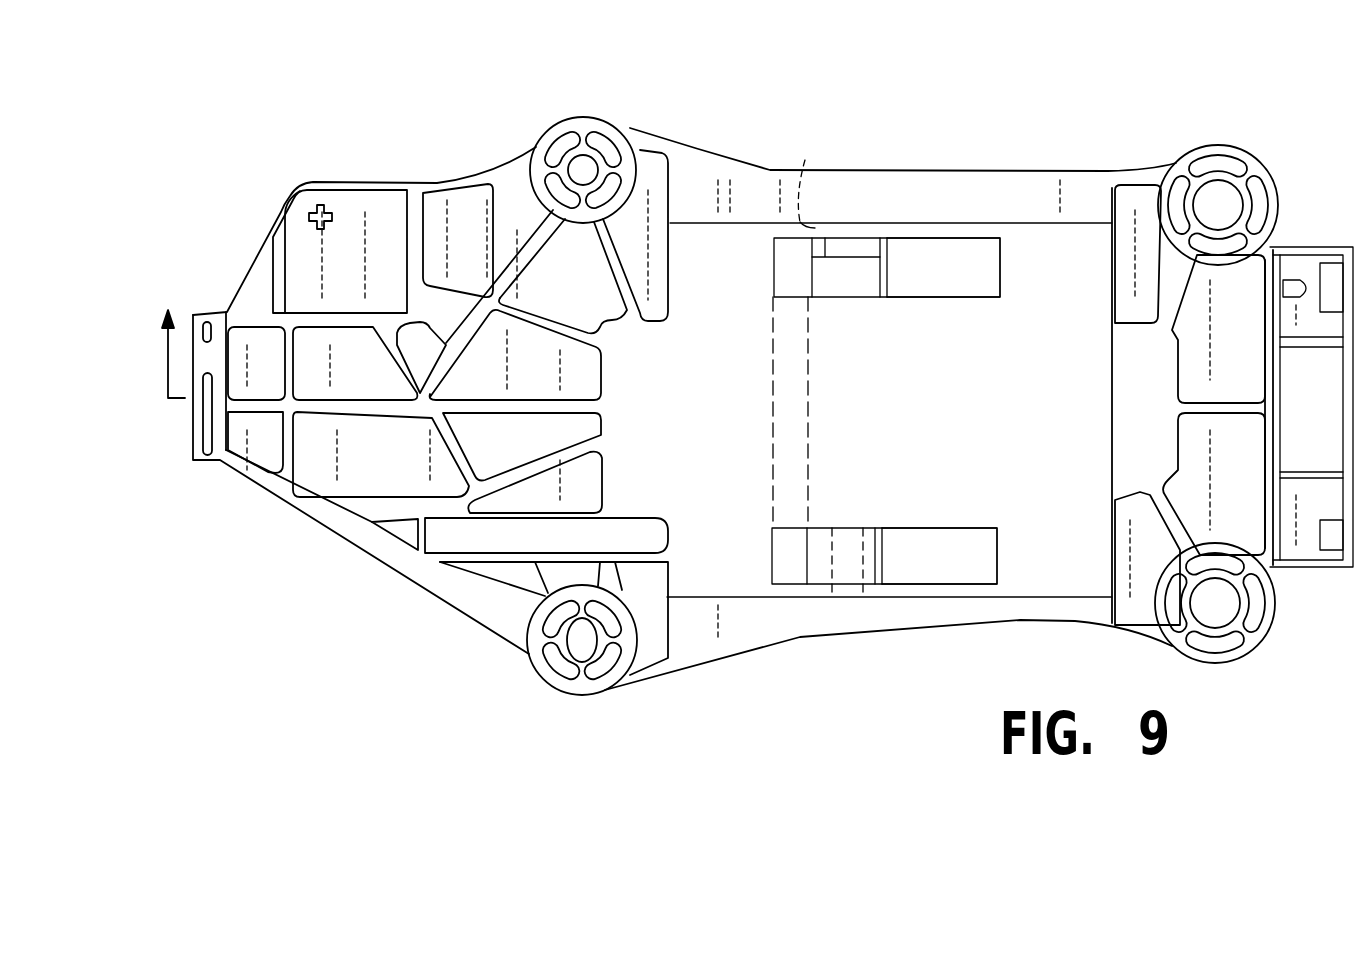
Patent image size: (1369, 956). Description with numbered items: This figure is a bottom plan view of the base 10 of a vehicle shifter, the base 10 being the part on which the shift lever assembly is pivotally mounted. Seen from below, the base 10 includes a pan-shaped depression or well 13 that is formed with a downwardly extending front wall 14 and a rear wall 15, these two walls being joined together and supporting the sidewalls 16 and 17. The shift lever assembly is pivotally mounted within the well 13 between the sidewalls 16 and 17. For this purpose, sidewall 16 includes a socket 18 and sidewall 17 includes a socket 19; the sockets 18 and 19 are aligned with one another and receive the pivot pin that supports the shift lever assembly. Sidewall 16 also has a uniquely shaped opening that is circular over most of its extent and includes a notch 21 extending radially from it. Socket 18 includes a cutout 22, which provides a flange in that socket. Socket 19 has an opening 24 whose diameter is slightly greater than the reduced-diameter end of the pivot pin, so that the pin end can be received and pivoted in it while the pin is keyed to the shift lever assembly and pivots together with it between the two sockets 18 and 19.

The base 10 is at (372, 135).
The well 13 is at (882, 412).
The front wall 14 is at (765, 412).
The rear wall 15 is at (1080, 412).
The sidewall 16 is at (908, 237).
The sidewall 17 is at (914, 590).
The socket 18 is at (853, 298).
The socket 19 is at (820, 536).
The notch 21 is at (819, 179).
The cutout 22 is at (858, 243).
The opening 24 is at (830, 595).